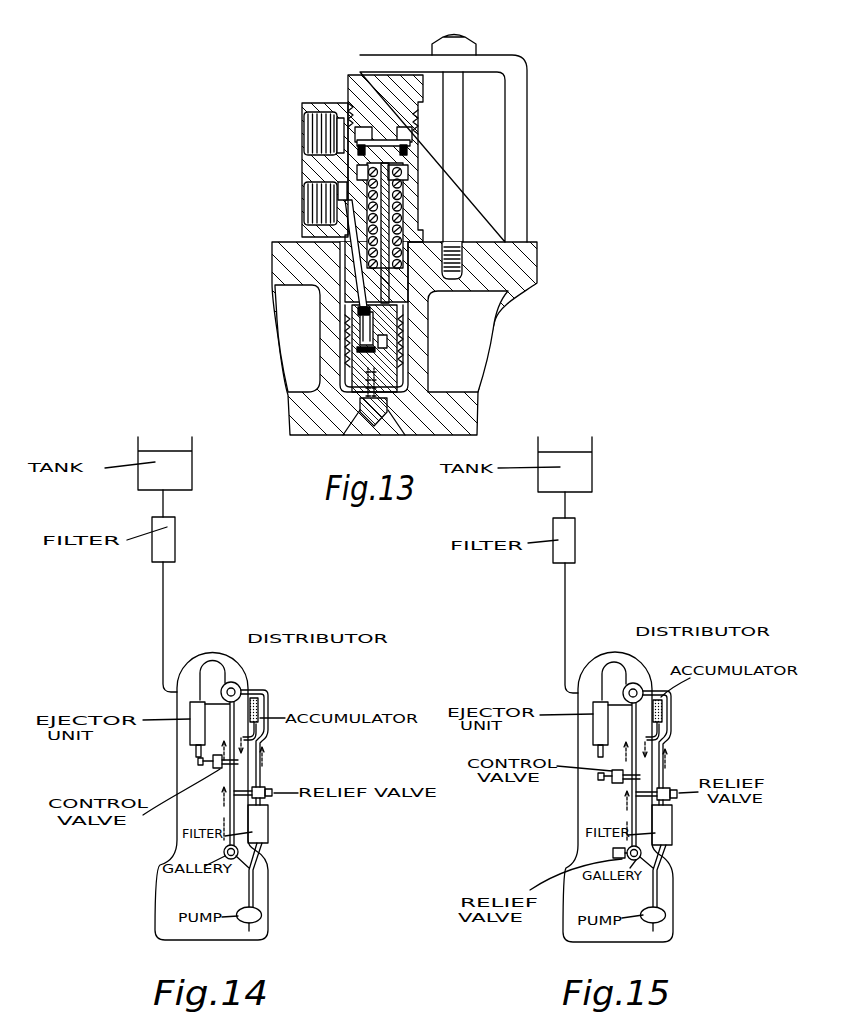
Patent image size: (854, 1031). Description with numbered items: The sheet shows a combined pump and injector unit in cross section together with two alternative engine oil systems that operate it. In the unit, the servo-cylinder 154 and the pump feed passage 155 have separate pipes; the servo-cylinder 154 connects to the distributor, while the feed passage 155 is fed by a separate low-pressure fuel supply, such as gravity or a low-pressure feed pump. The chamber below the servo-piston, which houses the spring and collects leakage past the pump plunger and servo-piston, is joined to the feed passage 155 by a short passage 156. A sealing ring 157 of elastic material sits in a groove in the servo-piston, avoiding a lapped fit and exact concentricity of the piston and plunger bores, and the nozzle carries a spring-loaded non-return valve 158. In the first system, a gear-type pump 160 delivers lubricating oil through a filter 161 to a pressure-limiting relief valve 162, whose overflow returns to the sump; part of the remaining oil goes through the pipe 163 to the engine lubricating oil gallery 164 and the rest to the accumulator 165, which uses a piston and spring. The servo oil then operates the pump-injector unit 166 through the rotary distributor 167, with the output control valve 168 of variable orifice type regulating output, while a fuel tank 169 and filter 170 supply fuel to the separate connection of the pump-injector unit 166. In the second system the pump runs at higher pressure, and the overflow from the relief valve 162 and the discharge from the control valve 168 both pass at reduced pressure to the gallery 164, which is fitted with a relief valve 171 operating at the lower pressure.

In FIG. 13, the servo-cylinder 154 is at (357, 136).
In FIG. 13, the pump feed passage 155 is at (356, 252).
In FIG. 13, the short passage 156 is at (362, 200).
In FIG. 13, the sealing ring 157 is at (358, 150).
In FIG. 13, the spring-loaded non-return valve 158 is at (367, 370).
In FIG. 14, the gear-type pump 160 is at (262, 917).
In FIG. 15, the gear-type pump 160 is at (666, 913).
In FIG. 14, the filter 161 is at (258, 838).
In FIG. 15, the filter 161 is at (662, 832).
In FIG. 14, the pressure-limiting relief valve 162 is at (261, 788).
In FIG. 15, the pressure-limiting relief valve 162 is at (666, 789).
In FIG. 14, the pipe 163 is at (235, 824).
In FIG. 15, the pipe 163 is at (638, 824).
In FIG. 14, the engine lubricating oil gallery 164 is at (252, 865).
In FIG. 15, the engine lubricating oil gallery 164 is at (658, 852).
In FIG. 14, the accumulator 165 is at (259, 712).
In FIG. 15, the accumulator 165 is at (664, 722).
In FIG. 14, the pump-injector unit 166 is at (193, 729).
In FIG. 15, the pump-injector unit 166 is at (596, 724).
In FIG. 14, the rotary distributor 167 is at (240, 682).
In FIG. 15, the rotary distributor 167 is at (641, 688).
In FIG. 14, the output control valve 168 is at (213, 768).
In FIG. 15, the output control valve 168 is at (614, 784).
In FIG. 14, the fuel tank 169 is at (173, 473).
In FIG. 15, the fuel tank 169 is at (582, 482).
In FIG. 14, the filter 170 is at (163, 542).
In FIG. 15, the filter 170 is at (568, 545).
In FIG. 15, the relief valve 171 is at (613, 852).